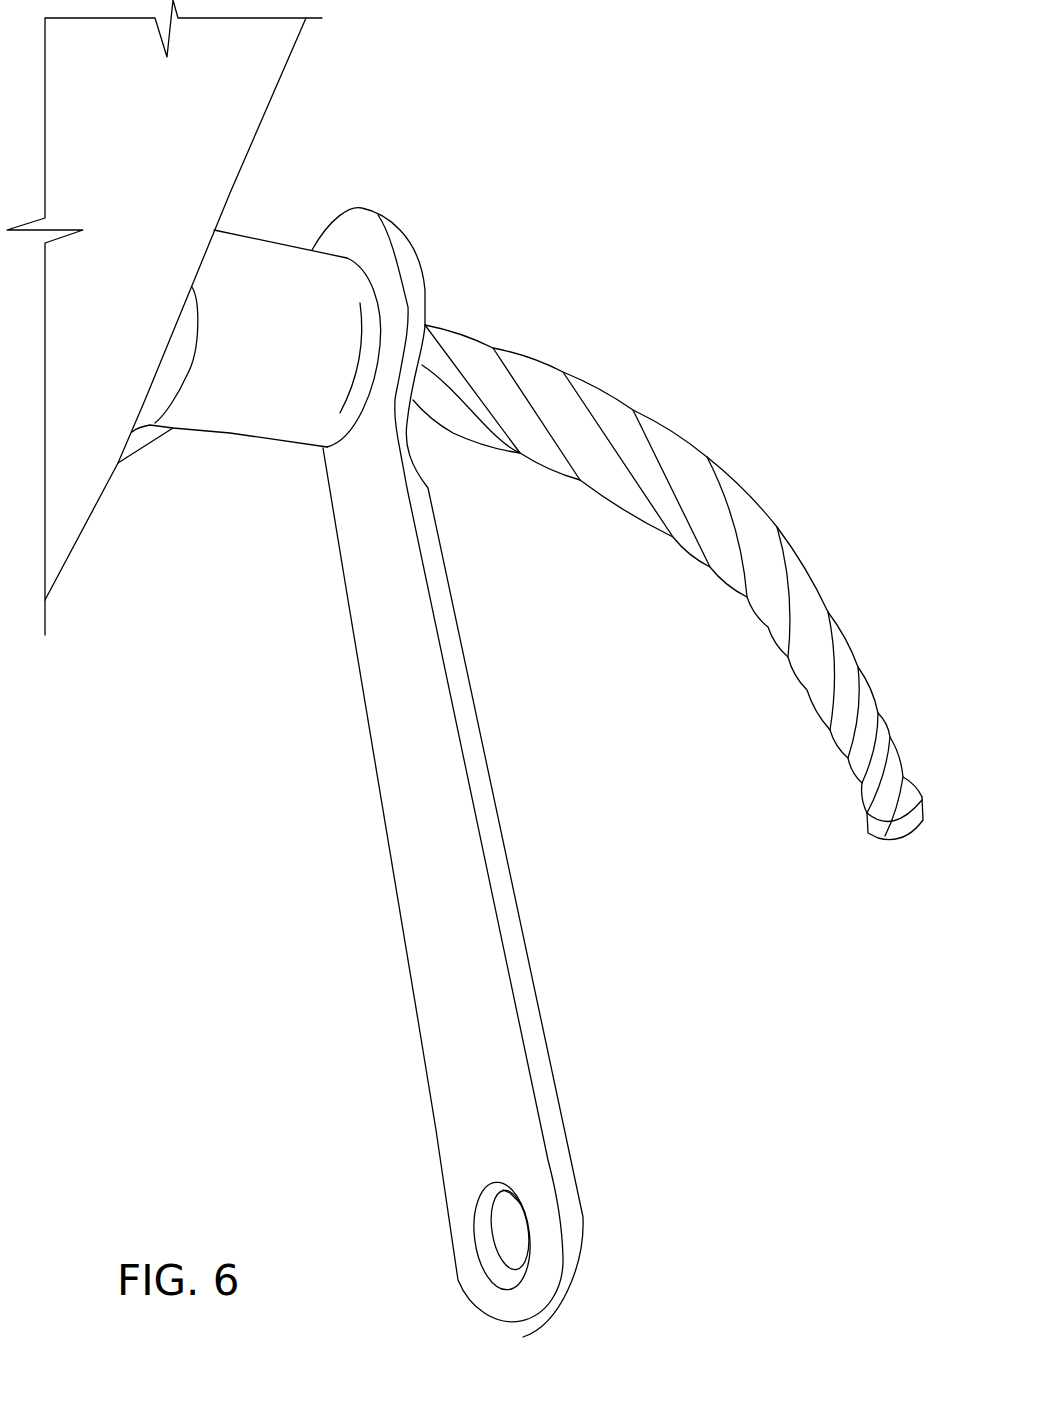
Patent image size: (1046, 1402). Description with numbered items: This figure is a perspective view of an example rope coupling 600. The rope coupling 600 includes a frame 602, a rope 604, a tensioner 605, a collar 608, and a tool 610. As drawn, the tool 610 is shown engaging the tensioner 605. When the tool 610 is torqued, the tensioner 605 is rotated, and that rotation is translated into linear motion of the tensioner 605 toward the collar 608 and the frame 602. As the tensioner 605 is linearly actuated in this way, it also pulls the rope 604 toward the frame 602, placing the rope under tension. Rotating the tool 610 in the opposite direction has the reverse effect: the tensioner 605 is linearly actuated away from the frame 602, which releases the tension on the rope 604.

The rope coupling 600 is at (204, 882).
The frame 602 is at (268, 105).
The rope 604 is at (667, 430).
The tensioner 605 is at (242, 436).
The collar 608 is at (173, 428).
The tool 610 is at (513, 950).